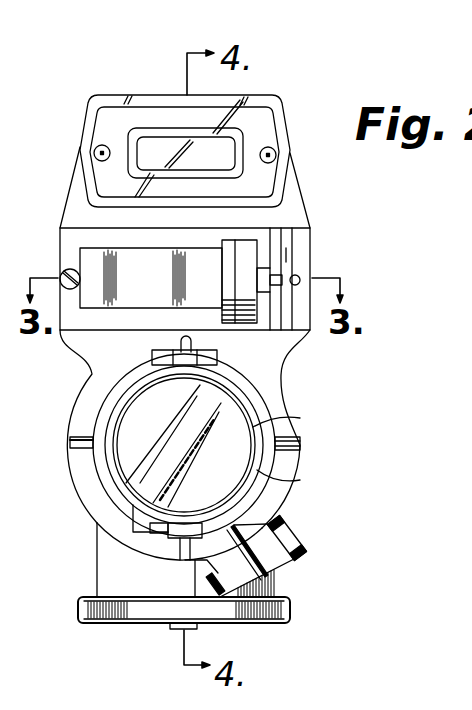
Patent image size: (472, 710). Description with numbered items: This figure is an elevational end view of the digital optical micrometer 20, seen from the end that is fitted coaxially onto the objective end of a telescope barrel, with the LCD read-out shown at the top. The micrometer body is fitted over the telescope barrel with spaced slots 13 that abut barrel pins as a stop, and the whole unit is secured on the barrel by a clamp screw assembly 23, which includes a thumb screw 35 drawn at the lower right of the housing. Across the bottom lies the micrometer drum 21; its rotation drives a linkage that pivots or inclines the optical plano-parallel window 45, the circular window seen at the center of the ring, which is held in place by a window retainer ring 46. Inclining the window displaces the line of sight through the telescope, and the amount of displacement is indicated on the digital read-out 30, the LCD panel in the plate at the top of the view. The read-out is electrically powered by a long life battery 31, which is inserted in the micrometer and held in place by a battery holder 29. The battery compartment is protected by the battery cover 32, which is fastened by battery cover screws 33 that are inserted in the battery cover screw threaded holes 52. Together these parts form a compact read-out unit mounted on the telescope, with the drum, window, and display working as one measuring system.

The spaced slots 13 is at (200, 344).
The digital optical micrometer 20 is at (360, 252).
The micrometer drum 21 is at (287, 612).
The clamp screw assembly 23 is at (292, 530).
The battery holder 29 is at (288, 246).
The digital read-out 30 is at (215, 138).
The long life battery 31 is at (258, 308).
The battery cover 32 is at (98, 260).
The battery cover screws 33 is at (71, 292).
The thumb screw 35 is at (300, 566).
The optical plano-parallel window 45 is at (256, 432).
The window retainer ring 46 is at (258, 461).
The battery cover screw threaded holes 52 is at (300, 280).